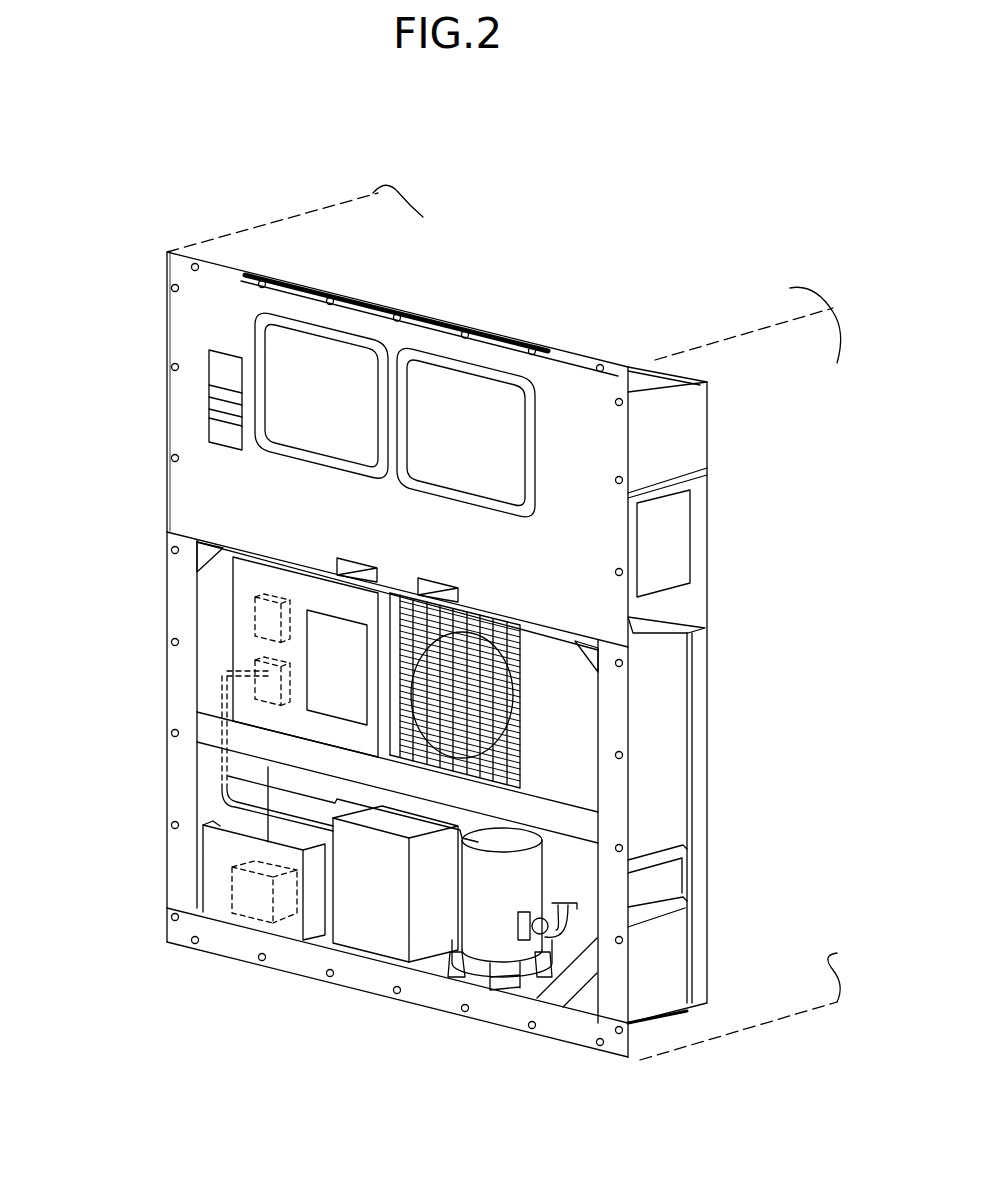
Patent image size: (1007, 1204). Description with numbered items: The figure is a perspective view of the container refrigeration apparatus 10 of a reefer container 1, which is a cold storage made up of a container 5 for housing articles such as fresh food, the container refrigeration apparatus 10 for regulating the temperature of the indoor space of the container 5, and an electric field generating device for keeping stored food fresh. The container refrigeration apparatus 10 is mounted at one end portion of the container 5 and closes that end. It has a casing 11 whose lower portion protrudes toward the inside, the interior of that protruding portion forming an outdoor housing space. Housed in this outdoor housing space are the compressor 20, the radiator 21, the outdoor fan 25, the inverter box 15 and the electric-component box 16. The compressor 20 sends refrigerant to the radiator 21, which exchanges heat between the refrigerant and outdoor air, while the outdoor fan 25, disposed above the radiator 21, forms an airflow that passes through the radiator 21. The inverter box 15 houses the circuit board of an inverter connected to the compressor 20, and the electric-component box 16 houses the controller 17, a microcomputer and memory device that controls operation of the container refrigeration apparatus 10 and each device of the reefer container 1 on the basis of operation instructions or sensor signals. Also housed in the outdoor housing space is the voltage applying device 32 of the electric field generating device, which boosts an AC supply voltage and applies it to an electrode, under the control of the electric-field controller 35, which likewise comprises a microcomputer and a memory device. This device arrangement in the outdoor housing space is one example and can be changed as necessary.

The reefer container 1 is at (228, 206).
The container 5 is at (318, 207).
The container refrigeration apparatus 10 is at (140, 320).
The casing 11 is at (205, 473).
The inverter box 15 is at (373, 933).
The electric-component box 16 is at (240, 603).
The controller 17 is at (268, 598).
The compressor 20 is at (527, 866).
The radiator 21 is at (563, 823).
The outdoor fan 25 is at (523, 697).
The voltage applying device 32 is at (250, 868).
The electric-field controller 35 is at (262, 658).